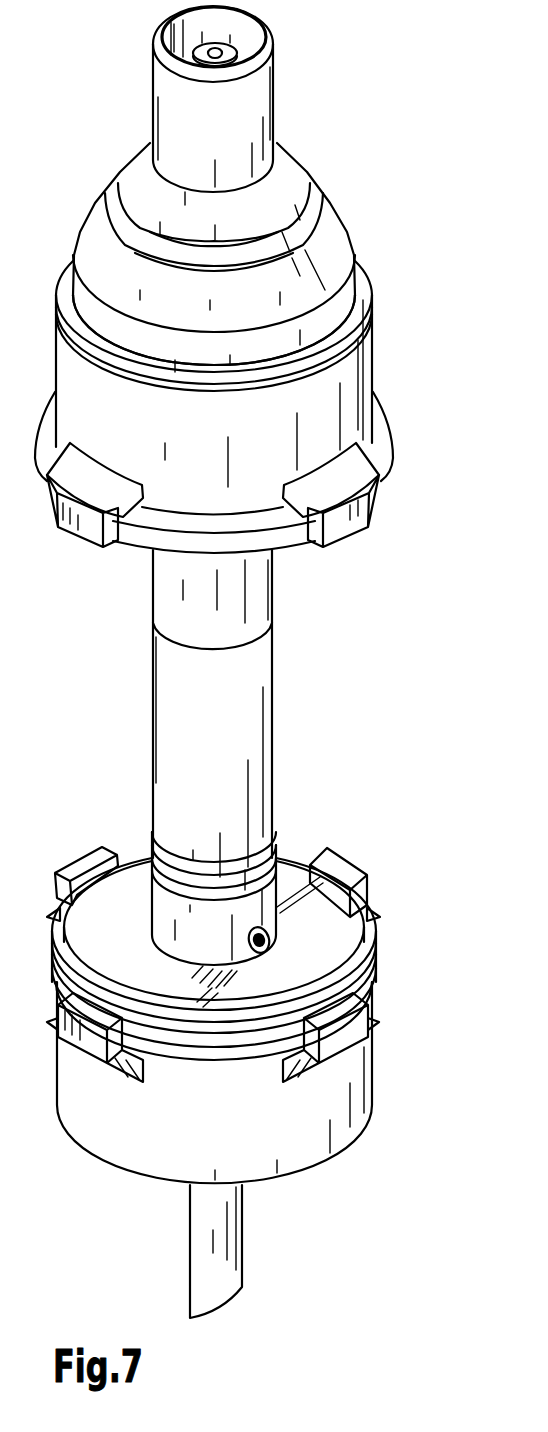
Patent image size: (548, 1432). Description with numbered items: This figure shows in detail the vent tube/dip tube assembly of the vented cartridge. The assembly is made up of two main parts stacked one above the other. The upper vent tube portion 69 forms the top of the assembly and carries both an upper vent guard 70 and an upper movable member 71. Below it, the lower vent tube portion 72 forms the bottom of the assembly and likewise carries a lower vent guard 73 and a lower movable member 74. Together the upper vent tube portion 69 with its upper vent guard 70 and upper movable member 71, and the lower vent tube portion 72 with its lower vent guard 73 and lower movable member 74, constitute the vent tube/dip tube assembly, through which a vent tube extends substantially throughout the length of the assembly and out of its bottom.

The upper vent tube portion 69 is at (330, 230).
The upper vent guard 70 is at (345, 407).
The upper movable member 71 is at (283, 548).
The lower vent tube portion 72 is at (320, 945).
The lower vent guard 73 is at (365, 1074).
The lower movable member 74 is at (293, 713).